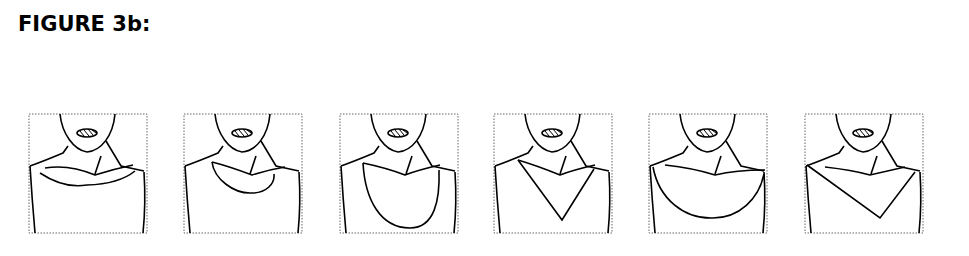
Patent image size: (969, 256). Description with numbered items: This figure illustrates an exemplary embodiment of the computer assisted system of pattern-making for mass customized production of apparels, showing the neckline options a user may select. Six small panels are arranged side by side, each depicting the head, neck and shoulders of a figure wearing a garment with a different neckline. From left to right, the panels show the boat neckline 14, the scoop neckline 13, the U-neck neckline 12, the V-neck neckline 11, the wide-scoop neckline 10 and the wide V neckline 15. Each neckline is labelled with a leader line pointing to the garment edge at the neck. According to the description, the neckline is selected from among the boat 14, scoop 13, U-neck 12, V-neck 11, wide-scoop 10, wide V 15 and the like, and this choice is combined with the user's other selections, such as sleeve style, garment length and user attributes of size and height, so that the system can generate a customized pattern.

The wide-scoop neckline 10 is at (710, 174).
The V-neck neckline 11 is at (565, 175).
The U-neck neckline 12 is at (410, 179).
The scoop neckline 13 is at (257, 161).
The boat neckline 14 is at (93, 158).
The wide V neckline 15 is at (866, 174).